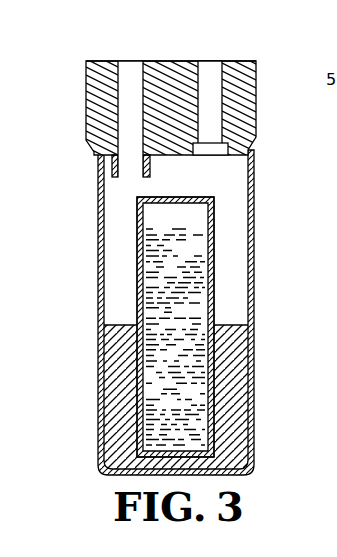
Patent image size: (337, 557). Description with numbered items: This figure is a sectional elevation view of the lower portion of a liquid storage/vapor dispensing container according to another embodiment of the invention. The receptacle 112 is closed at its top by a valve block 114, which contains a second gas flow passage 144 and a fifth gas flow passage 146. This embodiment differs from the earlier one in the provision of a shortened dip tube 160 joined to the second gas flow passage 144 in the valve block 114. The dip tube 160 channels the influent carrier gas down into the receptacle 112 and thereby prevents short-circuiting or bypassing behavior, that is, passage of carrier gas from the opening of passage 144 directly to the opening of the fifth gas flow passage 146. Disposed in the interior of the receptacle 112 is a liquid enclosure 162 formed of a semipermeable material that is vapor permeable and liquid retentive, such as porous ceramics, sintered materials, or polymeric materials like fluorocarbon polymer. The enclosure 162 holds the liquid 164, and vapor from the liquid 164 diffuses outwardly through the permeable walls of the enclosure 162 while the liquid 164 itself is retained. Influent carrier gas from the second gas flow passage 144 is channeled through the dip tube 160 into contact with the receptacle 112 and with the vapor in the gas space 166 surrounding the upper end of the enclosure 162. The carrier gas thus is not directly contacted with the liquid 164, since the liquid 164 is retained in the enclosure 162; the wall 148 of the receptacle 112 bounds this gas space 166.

The receptacle 112 is at (105, 400).
The valve block 114 is at (246, 80).
The second gas flow passage 144 is at (126, 62).
The fifth gas flow passage 146 is at (212, 62).
The tube wall 148 is at (238, 156).
The shortened dip tube 160 is at (113, 164).
The liquid enclosure 162 is at (213, 270).
The liquid 164 is at (148, 283).
The gas space 166 is at (228, 192).